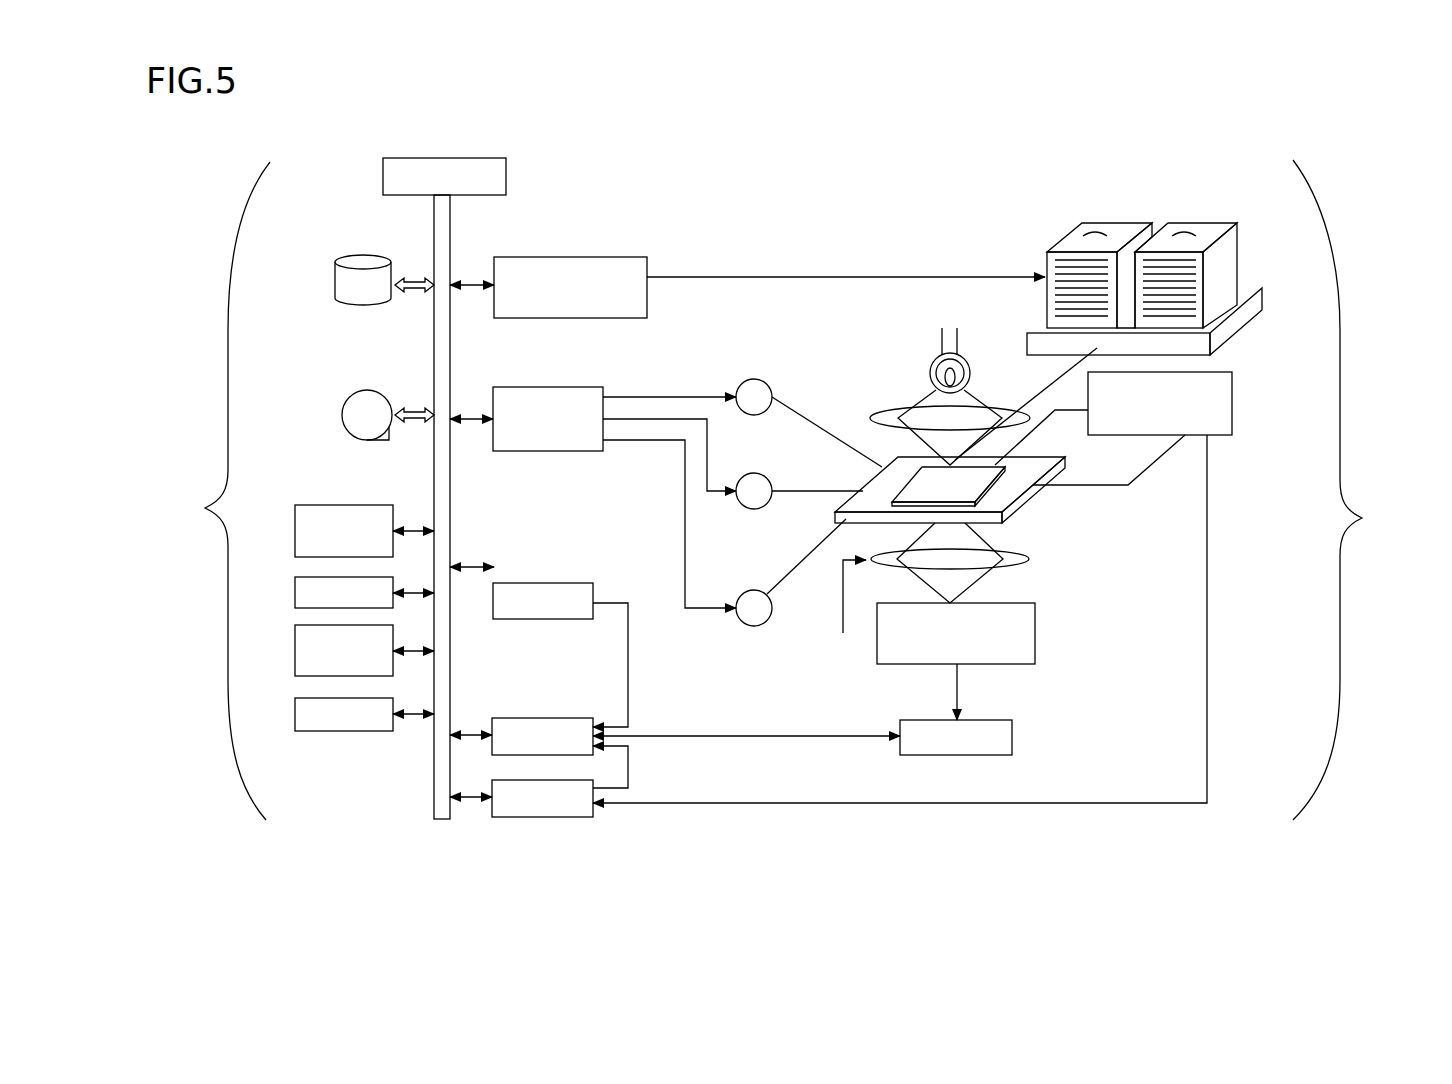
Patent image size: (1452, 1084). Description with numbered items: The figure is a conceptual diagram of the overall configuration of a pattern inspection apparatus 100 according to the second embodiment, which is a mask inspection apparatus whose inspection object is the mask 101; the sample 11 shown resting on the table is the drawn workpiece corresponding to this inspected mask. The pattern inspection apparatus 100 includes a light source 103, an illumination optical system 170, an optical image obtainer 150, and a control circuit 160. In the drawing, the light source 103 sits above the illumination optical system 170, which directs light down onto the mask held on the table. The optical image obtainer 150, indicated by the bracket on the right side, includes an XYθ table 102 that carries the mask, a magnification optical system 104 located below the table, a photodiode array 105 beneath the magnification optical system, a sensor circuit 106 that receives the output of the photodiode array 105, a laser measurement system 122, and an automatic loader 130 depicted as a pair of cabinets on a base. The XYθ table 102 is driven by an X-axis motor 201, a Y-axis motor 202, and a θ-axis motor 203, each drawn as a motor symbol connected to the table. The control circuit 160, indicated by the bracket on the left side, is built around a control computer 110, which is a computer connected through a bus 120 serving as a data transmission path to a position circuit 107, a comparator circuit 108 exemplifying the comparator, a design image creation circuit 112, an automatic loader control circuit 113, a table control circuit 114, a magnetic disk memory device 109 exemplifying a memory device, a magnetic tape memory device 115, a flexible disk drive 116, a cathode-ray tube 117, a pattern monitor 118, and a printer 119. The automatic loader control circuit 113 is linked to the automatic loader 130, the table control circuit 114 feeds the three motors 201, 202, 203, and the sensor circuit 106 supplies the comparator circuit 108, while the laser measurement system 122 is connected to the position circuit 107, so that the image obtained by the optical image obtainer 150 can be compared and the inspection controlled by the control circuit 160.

The pattern inspection apparatus 100 is at (796, 205).
The sample 11 is at (978, 400).
The mask 101 is at (1003, 485).
The XYθ table 102 is at (1002, 486).
The light source 103 is at (969, 347).
The magnification optical system 104 is at (1028, 570).
The photodiode array 105 is at (973, 665).
The sensor circuit 106 is at (1012, 732).
The position circuit 107 is at (513, 817).
The comparator circuit 108 is at (510, 718).
The magnetic disk memory device 109 is at (335, 292).
The control computer 110 is at (506, 158).
The design image creation circuit 112 is at (528, 583).
The automatic loader control circuit 113 is at (555, 257).
The table control circuit 114 is at (560, 387).
The magnetic tape memory device 115 is at (343, 413).
The flexible disk drive 116 is at (350, 505).
The cathode-ray tube 117 is at (295, 592).
The pattern monitor 118 is at (295, 650).
The printer 119 is at (295, 719).
The bus 120 is at (434, 782).
The laser measurement system 122 is at (1235, 422).
The automatic loader 130 is at (1062, 222).
The optical image obtainer 150 is at (1355, 490).
The control circuit 160 is at (211, 491).
The illumination optical system 170 is at (917, 390).
The X-axis motor 201 is at (752, 380).
The Y-axis motor 202 is at (752, 474).
The θ-axis motor 203 is at (752, 591).